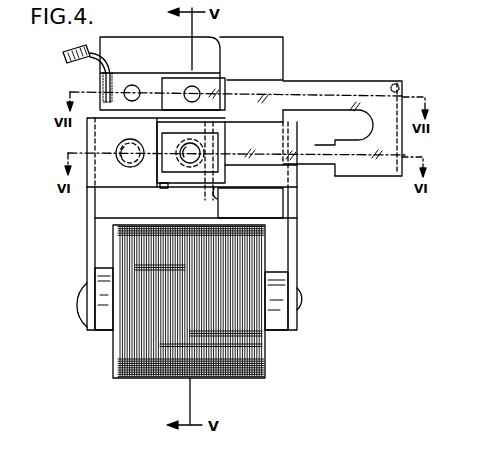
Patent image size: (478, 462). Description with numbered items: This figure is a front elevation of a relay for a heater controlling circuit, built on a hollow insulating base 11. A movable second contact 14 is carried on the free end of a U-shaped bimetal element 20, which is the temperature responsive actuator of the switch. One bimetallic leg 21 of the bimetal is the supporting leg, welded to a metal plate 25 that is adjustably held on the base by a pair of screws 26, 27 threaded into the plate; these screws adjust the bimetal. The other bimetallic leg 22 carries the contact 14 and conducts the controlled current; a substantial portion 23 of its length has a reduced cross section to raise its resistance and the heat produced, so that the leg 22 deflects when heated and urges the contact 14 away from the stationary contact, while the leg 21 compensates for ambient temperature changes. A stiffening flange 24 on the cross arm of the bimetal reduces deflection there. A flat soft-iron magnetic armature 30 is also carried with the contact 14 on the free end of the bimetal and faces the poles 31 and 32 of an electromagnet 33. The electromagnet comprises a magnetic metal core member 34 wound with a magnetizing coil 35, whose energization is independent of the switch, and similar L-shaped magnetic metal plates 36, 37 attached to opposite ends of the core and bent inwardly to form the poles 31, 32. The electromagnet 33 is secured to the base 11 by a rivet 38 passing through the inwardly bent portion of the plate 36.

The hollow insulating base 11 is at (283, 58).
The second contact 14 is at (207, 200).
The U-shaped bimetal element 20 is at (357, 144).
The bimetallic leg 21 is at (341, 72).
The bimetallic leg 22 is at (343, 140).
The reduced cross section portion 23 is at (313, 167).
The stiffening flange 24 is at (399, 86).
The metal plate 25 is at (178, 62).
The screw 26 is at (194, 86).
The screw 27 is at (132, 85).
The magnetic armature 30 is at (182, 178).
The pole 31 is at (165, 190).
The pole 32 is at (218, 193).
The electromagnet 33 is at (204, 250).
The magnetic metal core member 34 is at (278, 290).
The magnetizing coil 35 is at (248, 343).
The L-shaped magnetic metal plate 36 is at (87, 240).
The L-shaped magnetic metal plate 37 is at (292, 247).
The rivet 38 is at (124, 150).